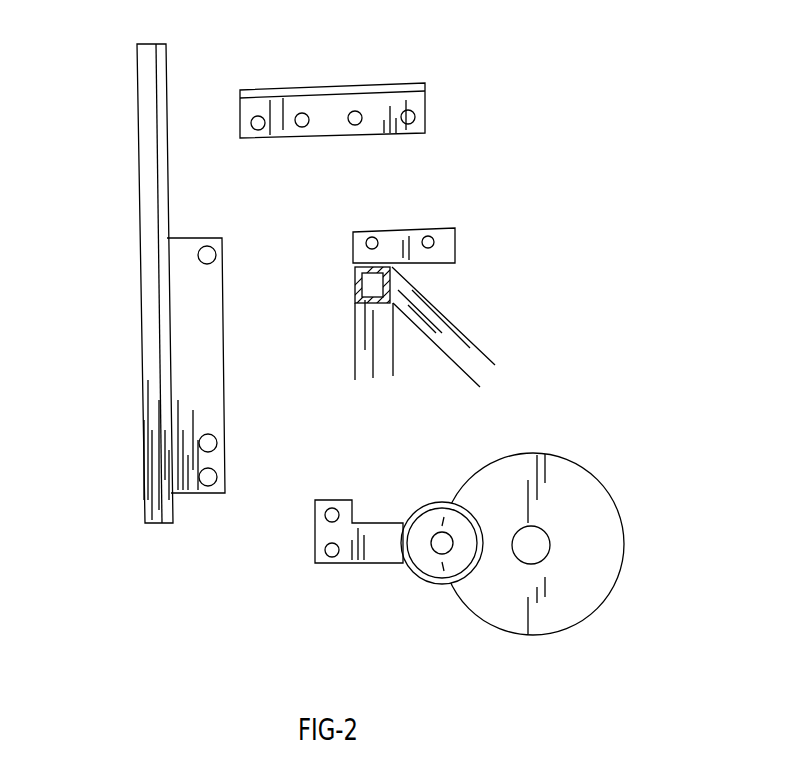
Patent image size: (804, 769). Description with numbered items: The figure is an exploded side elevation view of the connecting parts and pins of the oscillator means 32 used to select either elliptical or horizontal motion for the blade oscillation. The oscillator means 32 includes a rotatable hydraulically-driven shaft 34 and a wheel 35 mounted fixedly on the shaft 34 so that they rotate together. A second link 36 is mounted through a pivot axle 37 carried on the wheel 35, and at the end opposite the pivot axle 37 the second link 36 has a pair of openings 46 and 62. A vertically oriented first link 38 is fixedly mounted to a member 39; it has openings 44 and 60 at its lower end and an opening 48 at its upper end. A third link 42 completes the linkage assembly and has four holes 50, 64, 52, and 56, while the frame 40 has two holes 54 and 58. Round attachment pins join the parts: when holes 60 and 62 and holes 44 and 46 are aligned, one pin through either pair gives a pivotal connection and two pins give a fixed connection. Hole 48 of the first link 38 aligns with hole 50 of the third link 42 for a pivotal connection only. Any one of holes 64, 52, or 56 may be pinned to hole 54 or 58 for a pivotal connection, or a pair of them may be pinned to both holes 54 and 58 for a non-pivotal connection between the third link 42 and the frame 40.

The oscillator means 32 is at (595, 288).
The rotatable hydraulically-driven shaft 34 is at (550, 545).
The wheel 35 is at (583, 488).
The second link 36 is at (377, 553).
The pivot axle 37 is at (440, 541).
The first link 38 is at (225, 360).
The member 39 is at (149, 83).
The frame 40 is at (455, 245).
The third link 42 is at (337, 102).
The opening 44 is at (215, 477).
The opening 46 is at (325, 557).
The opening 48 is at (212, 252).
The hole 50 is at (257, 115).
The hole 52 is at (356, 112).
The hole 54 is at (367, 238).
The hole 56 is at (411, 115).
The hole 58 is at (433, 238).
The opening 60 is at (215, 440).
The opening 62 is at (321, 520).
The hole 64 is at (300, 113).